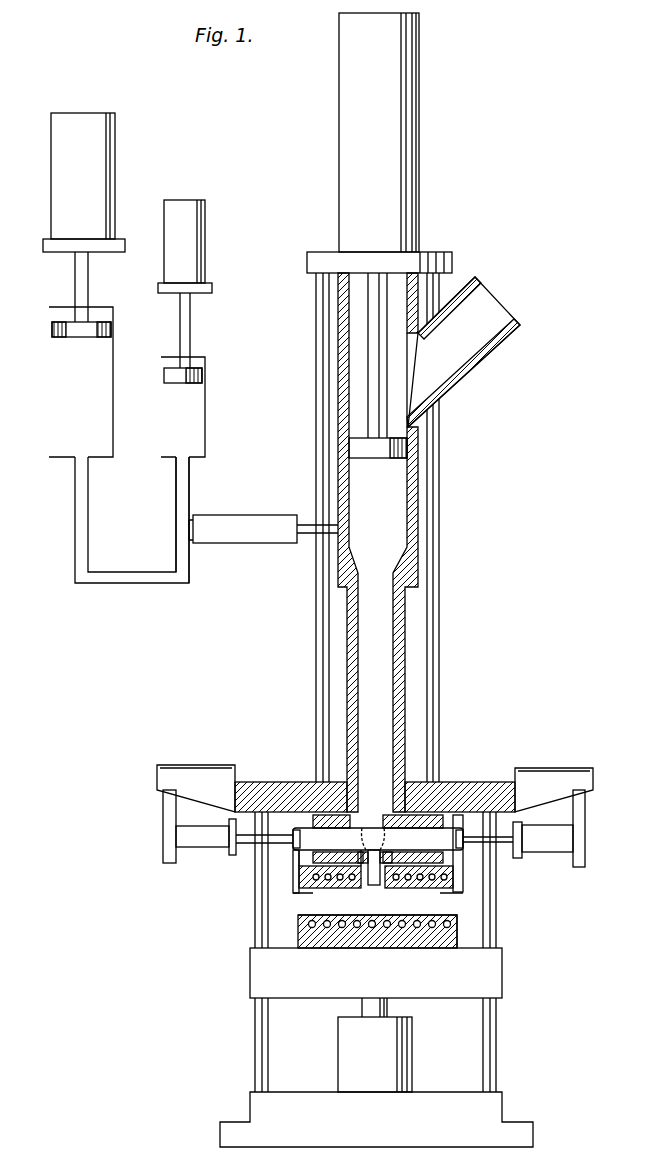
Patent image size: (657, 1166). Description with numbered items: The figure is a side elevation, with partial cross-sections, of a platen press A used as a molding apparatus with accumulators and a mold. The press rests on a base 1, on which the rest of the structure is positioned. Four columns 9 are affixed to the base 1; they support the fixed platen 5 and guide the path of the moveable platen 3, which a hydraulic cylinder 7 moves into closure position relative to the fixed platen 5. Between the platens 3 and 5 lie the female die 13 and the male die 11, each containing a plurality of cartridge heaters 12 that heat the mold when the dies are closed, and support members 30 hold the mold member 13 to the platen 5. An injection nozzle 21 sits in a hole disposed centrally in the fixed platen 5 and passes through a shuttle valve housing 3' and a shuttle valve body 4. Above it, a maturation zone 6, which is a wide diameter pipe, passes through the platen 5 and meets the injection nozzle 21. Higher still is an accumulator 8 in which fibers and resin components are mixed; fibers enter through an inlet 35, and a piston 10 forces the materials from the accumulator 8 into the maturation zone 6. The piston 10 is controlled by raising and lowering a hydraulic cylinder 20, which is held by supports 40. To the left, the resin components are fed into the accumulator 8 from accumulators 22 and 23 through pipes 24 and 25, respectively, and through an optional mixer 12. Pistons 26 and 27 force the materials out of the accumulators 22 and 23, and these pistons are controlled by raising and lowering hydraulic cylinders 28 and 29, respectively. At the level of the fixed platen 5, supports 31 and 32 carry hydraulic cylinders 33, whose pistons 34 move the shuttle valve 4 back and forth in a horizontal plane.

The base 1 is at (495, 1113).
The platen 3 is at (390, 964).
The shuttle valve housing 3' is at (310, 783).
The shuttle valve body 4 is at (366, 826).
The fixed platen 5 is at (460, 780).
The maturation zone 6 is at (375, 700).
The hydraulic cylinder 7 is at (342, 1042).
The accumulator 8 is at (378, 542).
The columns 9 is at (255, 1040).
The piston 10 is at (380, 453).
The male die 11 is at (455, 942).
The cartridge heaters 12 is at (230, 520).
The female die 13 is at (308, 886).
The hydraulic cylinder 20 is at (347, 118).
The injection nozzle 21 is at (370, 880).
The accumulator 22 is at (197, 413).
The accumulator 23 is at (63, 400).
The pipe 24 is at (182, 495).
The pipe 25 is at (77, 508).
The piston 26 is at (190, 384).
The piston 27 is at (68, 330).
The hydraulic cylinder 28 is at (178, 205).
The hydraulic cylinder 29 is at (74, 118).
The support members 30 is at (293, 875).
The support 31 is at (189, 763).
The support 32 is at (163, 812).
The hydraulic cylinders 33 is at (192, 850).
The pistons 34 is at (237, 848).
The inlet 35 is at (490, 305).
The supports 40 is at (315, 618).
The platen press A is at (235, 974).